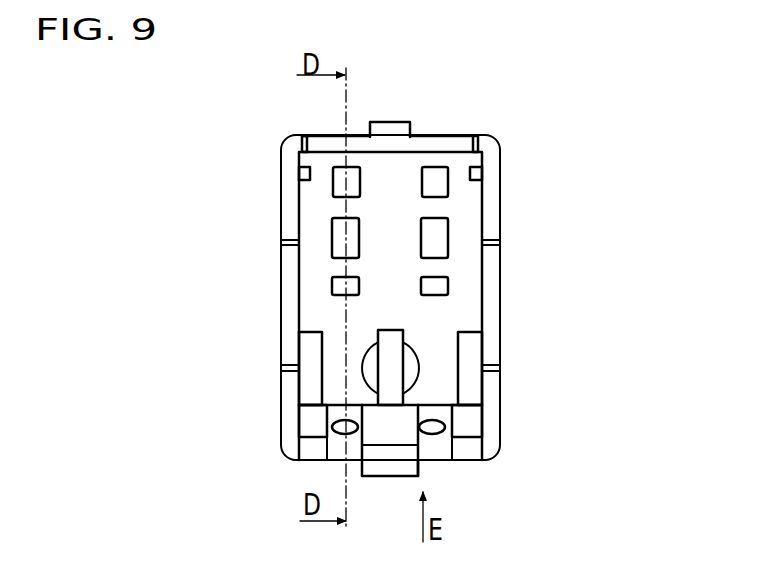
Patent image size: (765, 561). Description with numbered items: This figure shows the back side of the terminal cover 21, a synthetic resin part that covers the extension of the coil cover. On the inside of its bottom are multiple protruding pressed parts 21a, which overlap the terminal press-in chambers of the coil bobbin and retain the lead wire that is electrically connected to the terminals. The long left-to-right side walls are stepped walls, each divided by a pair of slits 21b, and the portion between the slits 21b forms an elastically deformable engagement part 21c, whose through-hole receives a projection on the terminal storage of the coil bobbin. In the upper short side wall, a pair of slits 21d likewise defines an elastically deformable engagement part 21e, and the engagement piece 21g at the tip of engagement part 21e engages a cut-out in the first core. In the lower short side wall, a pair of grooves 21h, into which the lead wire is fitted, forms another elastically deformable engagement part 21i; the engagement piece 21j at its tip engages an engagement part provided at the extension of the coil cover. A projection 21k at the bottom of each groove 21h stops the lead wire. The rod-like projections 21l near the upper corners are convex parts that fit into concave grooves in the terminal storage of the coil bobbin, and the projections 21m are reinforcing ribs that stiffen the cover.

The terminal cover 21 is at (585, 166).
The protruding pressed parts 21a is at (342, 237).
The slits 21b is at (282, 242).
The engagement part 21c is at (290, 325).
The slits 21d is at (303, 138).
The engagement part 21e is at (441, 144).
The engagement piece 21g is at (387, 132).
The grooves 21h is at (337, 446).
The engagement part 21i is at (379, 450).
The engagement piece 21j is at (418, 468).
The projection 21k is at (328, 422).
The rod-like projection 21l is at (302, 173).
The reinforcing rib 21m is at (313, 346).